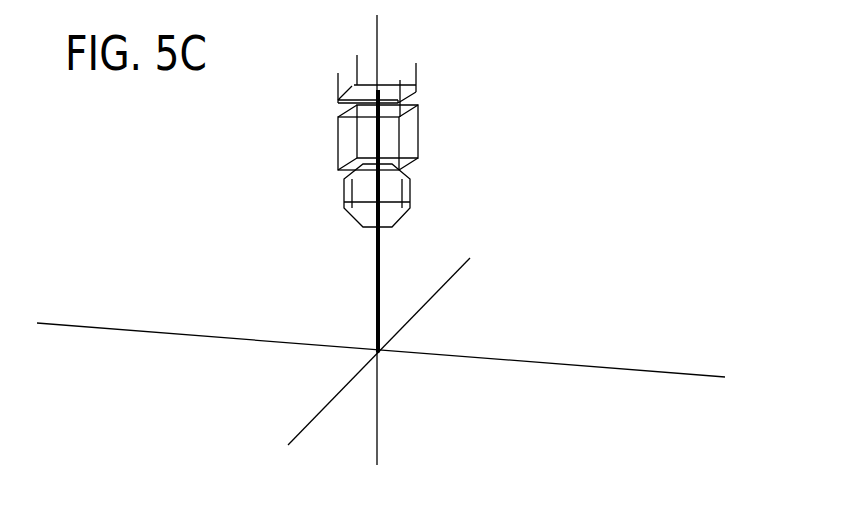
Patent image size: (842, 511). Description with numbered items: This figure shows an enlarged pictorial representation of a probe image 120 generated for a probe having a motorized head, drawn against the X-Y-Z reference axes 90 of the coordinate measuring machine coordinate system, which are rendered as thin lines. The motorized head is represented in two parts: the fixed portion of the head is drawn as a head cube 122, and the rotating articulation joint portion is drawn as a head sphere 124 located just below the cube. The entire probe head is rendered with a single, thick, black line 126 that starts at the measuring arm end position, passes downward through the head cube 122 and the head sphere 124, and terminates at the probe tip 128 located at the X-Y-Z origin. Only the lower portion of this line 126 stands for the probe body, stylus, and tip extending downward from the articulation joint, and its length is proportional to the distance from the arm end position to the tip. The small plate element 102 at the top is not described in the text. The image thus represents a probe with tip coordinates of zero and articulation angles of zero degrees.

The X-Y-Z reference axes 90 is at (223, 337).
The mounting plate 102 is at (339, 91).
The probe image 120 is at (556, 122).
The head cube 122 is at (338, 134).
The head sphere 124 is at (343, 194).
The single, thick, black line 126 is at (381, 264).
The probe tip 128 is at (373, 355).